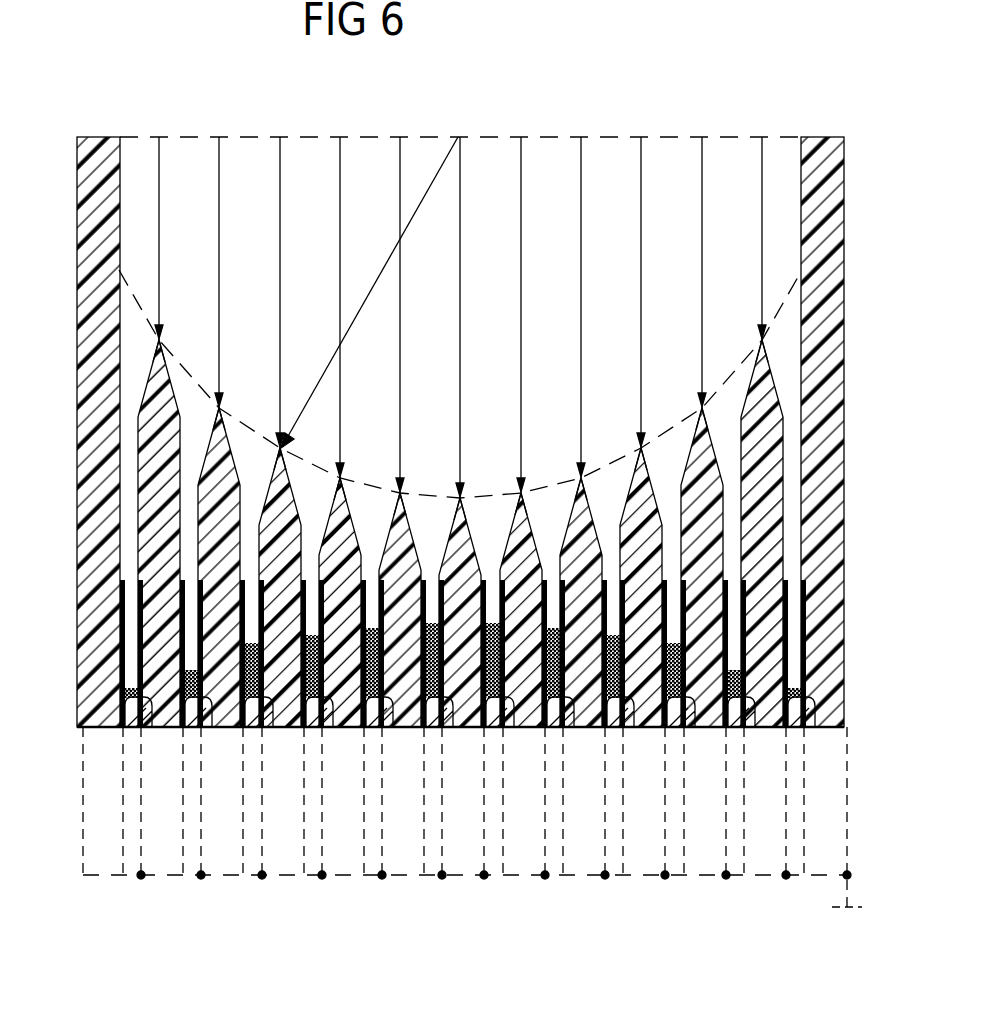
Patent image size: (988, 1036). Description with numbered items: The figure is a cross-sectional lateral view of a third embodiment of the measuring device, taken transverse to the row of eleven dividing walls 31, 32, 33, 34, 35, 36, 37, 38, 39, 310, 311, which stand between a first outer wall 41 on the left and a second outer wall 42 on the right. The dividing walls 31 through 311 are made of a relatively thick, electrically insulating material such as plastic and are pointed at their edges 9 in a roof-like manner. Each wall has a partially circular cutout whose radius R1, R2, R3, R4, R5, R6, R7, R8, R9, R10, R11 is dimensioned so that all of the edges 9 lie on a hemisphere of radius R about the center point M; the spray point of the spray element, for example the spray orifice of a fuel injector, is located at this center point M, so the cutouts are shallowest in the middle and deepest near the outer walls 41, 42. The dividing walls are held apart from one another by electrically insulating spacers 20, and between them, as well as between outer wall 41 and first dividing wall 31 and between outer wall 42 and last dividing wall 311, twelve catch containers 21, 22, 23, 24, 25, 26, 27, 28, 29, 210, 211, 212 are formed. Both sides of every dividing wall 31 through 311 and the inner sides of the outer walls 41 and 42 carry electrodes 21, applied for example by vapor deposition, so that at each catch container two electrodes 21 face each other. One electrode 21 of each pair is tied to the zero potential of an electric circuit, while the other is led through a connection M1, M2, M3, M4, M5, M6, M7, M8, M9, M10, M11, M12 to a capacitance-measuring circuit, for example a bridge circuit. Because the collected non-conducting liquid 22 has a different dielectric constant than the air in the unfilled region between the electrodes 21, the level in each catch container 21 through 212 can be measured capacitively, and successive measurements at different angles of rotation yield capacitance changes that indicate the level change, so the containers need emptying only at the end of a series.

The edge 9 is at (161, 340).
The spacer 20 is at (133, 730).
The electrode 21 is at (147, 366).
The liquid 22 is at (208, 442).
The catch container 23 is at (267, 482).
The catch container 24 is at (327, 508).
The catch container 25 is at (386, 526).
The catch container 26 is at (444, 536).
The catch container 27 is at (504, 534).
The catch container 28 is at (564, 524).
The catch container 29 is at (621, 512).
The catch container 210 is at (668, 470).
The catch container 211 is at (725, 413).
The catch container 212 is at (790, 353).
The dividing wall 31 is at (171, 622).
The dividing wall 32 is at (231, 622).
The dividing wall 33 is at (292, 622).
The dividing wall 34 is at (352, 622).
The dividing wall 35 is at (412, 622).
The dividing wall 36 is at (472, 622).
The dividing wall 37 is at (533, 622).
The dividing wall 38 is at (593, 622).
The dividing wall 39 is at (653, 622).
The dividing wall 310 is at (719, 622).
The dividing wall 311 is at (779, 622).
The outer wall 41 is at (88, 170).
The outer wall 42 is at (836, 166).
The radius R is at (372, 292).
The center point M is at (457, 136).
The radius R1 is at (157, 140).
The radius R2 is at (217, 140).
The radius R3 is at (278, 140).
The radius R4 is at (338, 140).
The radius R5 is at (398, 140).
The radius R6 is at (458, 140).
The radius R7 is at (519, 140).
The radius R8 is at (579, 140).
The radius R9 is at (639, 140).
The radius R10 is at (700, 140).
The radius R11 is at (760, 140).
The connection M1 is at (120, 798).
The connection M2 is at (180, 798).
The connection M3 is at (240, 798).
The connection M4 is at (301, 798).
The connection M5 is at (361, 798).
The connection M6 is at (421, 798).
The connection M7 is at (507, 798).
The connection M8 is at (567, 798).
The connection M9 is at (627, 798).
The connection M10 is at (688, 798).
The connection M11 is at (748, 798).
The connection M12 is at (808, 798).